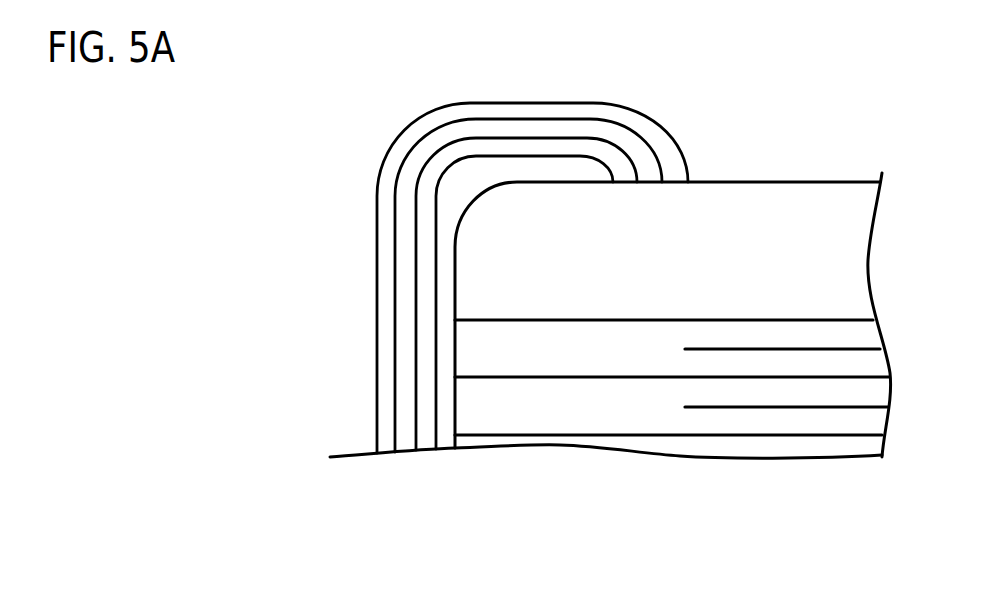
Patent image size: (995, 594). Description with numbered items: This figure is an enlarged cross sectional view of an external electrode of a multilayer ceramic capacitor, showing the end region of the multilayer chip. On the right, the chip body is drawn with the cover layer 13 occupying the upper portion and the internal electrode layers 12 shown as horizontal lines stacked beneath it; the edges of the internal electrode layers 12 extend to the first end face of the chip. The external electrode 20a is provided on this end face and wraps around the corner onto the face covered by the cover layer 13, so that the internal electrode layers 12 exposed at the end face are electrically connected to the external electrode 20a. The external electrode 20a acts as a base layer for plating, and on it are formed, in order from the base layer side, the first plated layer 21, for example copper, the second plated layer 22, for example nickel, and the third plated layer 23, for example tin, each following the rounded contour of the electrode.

The internal electrode layer 12 is at (620, 437).
The cover layer 13 is at (793, 225).
The external electrode 20a is at (445, 343).
The first plated layer 21 is at (427, 275).
The second plated layer 22 is at (405, 212).
The third plated layer 23 is at (393, 165).